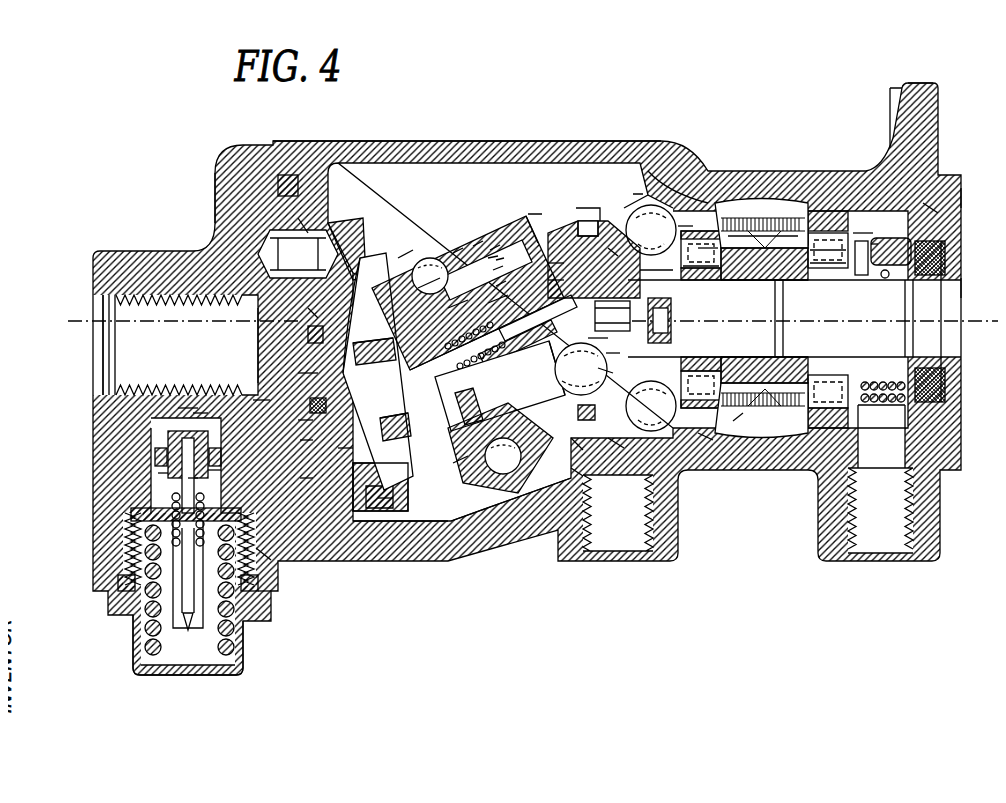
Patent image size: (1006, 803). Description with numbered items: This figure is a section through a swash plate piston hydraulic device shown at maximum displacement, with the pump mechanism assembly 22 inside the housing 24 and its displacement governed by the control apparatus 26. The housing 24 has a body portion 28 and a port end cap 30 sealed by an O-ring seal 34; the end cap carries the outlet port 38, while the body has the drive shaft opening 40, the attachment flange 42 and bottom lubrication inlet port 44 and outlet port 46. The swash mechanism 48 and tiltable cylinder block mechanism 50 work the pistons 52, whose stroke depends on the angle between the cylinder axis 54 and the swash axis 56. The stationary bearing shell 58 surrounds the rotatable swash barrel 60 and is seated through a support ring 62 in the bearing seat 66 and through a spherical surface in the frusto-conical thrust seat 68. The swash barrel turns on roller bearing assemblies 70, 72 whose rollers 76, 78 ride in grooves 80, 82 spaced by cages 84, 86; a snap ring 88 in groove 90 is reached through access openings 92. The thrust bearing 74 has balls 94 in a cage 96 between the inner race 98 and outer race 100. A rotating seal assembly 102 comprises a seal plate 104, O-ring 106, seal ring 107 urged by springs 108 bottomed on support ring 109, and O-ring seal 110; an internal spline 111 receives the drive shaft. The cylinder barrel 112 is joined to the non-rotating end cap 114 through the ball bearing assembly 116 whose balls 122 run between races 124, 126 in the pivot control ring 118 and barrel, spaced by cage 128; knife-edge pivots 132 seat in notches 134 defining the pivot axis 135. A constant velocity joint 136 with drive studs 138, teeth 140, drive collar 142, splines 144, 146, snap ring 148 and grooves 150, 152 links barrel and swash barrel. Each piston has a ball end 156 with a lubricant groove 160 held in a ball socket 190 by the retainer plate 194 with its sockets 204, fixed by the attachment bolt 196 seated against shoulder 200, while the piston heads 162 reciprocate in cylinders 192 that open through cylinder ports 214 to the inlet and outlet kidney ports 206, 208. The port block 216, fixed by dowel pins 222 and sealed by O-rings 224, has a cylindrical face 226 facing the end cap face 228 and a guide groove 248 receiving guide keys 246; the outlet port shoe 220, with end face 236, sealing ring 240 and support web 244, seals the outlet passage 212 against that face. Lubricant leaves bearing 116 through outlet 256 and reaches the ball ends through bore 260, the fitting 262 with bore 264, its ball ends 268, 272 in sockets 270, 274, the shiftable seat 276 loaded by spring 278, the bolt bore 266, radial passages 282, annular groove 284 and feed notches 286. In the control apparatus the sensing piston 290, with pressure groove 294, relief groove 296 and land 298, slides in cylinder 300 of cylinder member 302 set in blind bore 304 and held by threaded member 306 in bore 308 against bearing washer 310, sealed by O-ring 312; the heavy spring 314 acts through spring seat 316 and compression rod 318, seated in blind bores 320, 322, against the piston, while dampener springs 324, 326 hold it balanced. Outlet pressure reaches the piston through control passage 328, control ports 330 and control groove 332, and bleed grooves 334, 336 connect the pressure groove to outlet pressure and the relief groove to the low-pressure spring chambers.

The variable displacement pump mechanism assembly 22 is at (634, 175).
The casing or housing 24 is at (440, 133).
The control apparatus 26 is at (128, 620).
The body portion 28 is at (700, 240).
The port end cap portion 30 is at (212, 180).
The O-ring seal 34 is at (283, 163).
The outlet port 38 is at (108, 348).
The drive shaft opening 40 is at (953, 280).
The attachment flange 42 is at (903, 75).
The lubrication and cooling flow inlet port 44 is at (870, 545).
The lubrication and cooling flow outlet port 46 is at (614, 538).
The swash mechanism 48 is at (700, 262).
The tiltable cylinder block mechanism 50 is at (428, 240).
The pistons 52 is at (555, 462).
The axis of the cylinder block mechanism 54 is at (385, 392).
The axis of the swash mechanism 56 is at (968, 313).
The bearing shell 58 is at (733, 410).
The swash barrel 60 is at (730, 270).
The support ring 62 is at (810, 226).
The cylindrical bearing seat 66 is at (853, 232).
The frusto-conical thrust support seat 68 is at (700, 430).
The roller bearing assembly 70 is at (811, 400).
The roller bearing assembly 72 is at (700, 400).
The thrust ball bearing assembly 74 is at (660, 190).
The anti-friction rollers 76 is at (852, 232).
The anti-friction rollers 78 is at (727, 300).
The annular groove 80 is at (806, 258).
The annular groove 82 is at (700, 260).
The roller bearing cage 84 is at (772, 228).
The roller bearing cage 86 is at (752, 222).
The split snap ring 88 is at (796, 255).
The internal annular groove 90 is at (775, 415).
The access openings 92 is at (755, 212).
The ball bearings 94 is at (584, 231).
The frusto-conical cage 96 is at (686, 218).
The inner race 98 is at (606, 252).
The outer race 100 is at (664, 200).
The rotating seal assembly 102 is at (953, 190).
The stationary seal plate 104 is at (922, 396).
The O-ring 106 is at (938, 248).
The metallic seal ring 107 is at (922, 200).
The compression springs 108 is at (866, 402).
The support ring 109 is at (866, 236).
The O-ring seal 110 is at (876, 262).
The internal spline 111 is at (872, 270).
The cylinder barrel 112 is at (470, 235).
The cylinder end cap 114 is at (355, 265).
The ball bearing assembly 116 is at (418, 252).
The pivot control ring 118 is at (520, 496).
The ball bearings 122 is at (440, 268).
The outer bearing race 124 is at (458, 470).
The inner bearing race 126 is at (428, 284).
The bearing cage 128 is at (450, 240).
The knife-edge pivots 132 is at (575, 442).
The pivot notches 134 is at (598, 362).
The pivot axis 135 is at (590, 412).
The constant velocity universal joint 136 is at (549, 208).
The external drive studs 138 is at (600, 462).
The internal drive teeth 140 is at (520, 215).
The drive collar 142 is at (485, 248).
The internal splines 144 is at (515, 448).
The external splines 146 is at (494, 250).
The split snap ring 148 is at (487, 240).
The external groove 150 is at (490, 258).
The internal groove 152 is at (490, 276).
The spherical ball end portion 156 is at (605, 347).
The center groove 160 is at (560, 372).
The piston heads 162 is at (446, 456).
The ball sockets 190 is at (638, 376).
The cylinders 192 is at (500, 386).
The retainer plate 194 is at (575, 212).
The attachment bolt 196 is at (660, 322).
The shoulder 200 is at (653, 270).
The ball sockets 204 is at (595, 330).
The inlet kidney port 206 is at (663, 308).
The outlet kidney port 208 is at (385, 413).
The outlet passage 212 is at (298, 393).
The cylinder ports 214 is at (378, 488).
The port block 216 is at (335, 215).
The outlet port shoe 220 is at (300, 368).
The dowel pins 222 is at (298, 222).
The O-rings 224 is at (262, 322).
The segmental cylindrical surface 226 is at (340, 440).
The outer face 228 is at (385, 520).
The segmental cylindrical end face 236 is at (308, 338).
The resilient sealing ring 240 is at (343, 468).
The support web 244 is at (298, 412).
The guide keys 246 is at (372, 508).
The guide groove 248 is at (330, 560).
The lubricant outlet 256 is at (400, 242).
The central bore 260 is at (487, 334).
The lubrication fitting 262 is at (456, 311).
The central bore 264 is at (490, 308).
The central blind bore 266 is at (551, 256).
The ball end 268 is at (549, 274).
The mating socket 270 is at (527, 310).
The universal ball end 272 is at (480, 352).
The mating socket 274 is at (577, 369).
The shiftable seat member 276 is at (410, 440).
The light compression spring 278 is at (375, 372).
The radial passages 282 is at (598, 300).
The annular lubricating groove 284 is at (598, 315).
The lubricant feed notches 286 is at (594, 276).
The sensing piston 290 is at (98, 458).
The upper annular pressure groove 294 is at (115, 430).
The lower annular relief groove 296 is at (185, 470).
The annular control land 298 is at (300, 432).
The cylinder 300 is at (215, 438).
The cylinder barrel member 302 is at (298, 470).
The blind bore 304 is at (155, 412).
The hollow threaded member 306 is at (262, 603).
The threaded bore 308 is at (248, 548).
The bearing washer 310 is at (218, 503).
The O-ring 312 is at (258, 584).
The coil compression spring 314 is at (130, 555).
The spring seat member 316 is at (226, 626).
The compression rod 318 is at (215, 646).
The blind bore 320 is at (175, 620).
The blind bore 322 is at (177, 400).
The dampener compression spring 324 is at (165, 492).
The dampener compression spring 326 is at (130, 513).
The control passage 328 is at (255, 392).
The control ports 330 is at (212, 452).
The annular control groove 332 is at (158, 466).
The bleed groove 334 is at (193, 405).
The bleed groove 336 is at (203, 462).